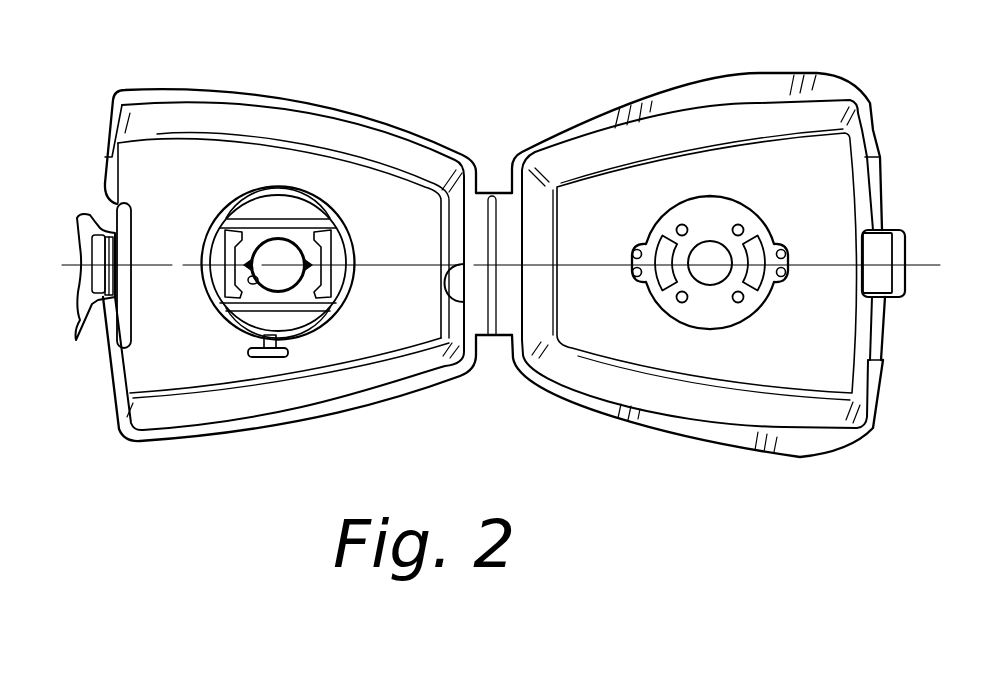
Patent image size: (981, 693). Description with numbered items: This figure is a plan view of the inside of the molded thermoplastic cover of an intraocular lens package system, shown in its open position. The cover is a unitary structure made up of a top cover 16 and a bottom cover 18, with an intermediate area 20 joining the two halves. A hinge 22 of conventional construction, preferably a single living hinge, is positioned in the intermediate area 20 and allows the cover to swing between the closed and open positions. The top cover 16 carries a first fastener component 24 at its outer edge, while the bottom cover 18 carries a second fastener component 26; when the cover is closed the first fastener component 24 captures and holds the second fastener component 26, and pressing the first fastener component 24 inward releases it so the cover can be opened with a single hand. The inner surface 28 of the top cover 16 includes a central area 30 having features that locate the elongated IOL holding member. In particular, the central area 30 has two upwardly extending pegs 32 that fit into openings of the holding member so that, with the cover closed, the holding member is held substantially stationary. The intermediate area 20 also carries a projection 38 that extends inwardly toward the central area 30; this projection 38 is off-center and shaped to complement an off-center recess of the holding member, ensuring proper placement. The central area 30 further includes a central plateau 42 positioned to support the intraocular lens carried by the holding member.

The top cover 16 is at (272, 407).
The bottom cover 18 is at (800, 395).
The intermediate area 20 is at (508, 317).
The hinge 22 is at (490, 193).
The first fastener component 24 is at (83, 294).
The second fastener component 26 is at (905, 297).
The inner surface 28 is at (173, 360).
The central area 30 is at (214, 203).
The pegs 32 is at (218, 283).
The projection 38 is at (450, 306).
The central plateau 42 is at (295, 253).